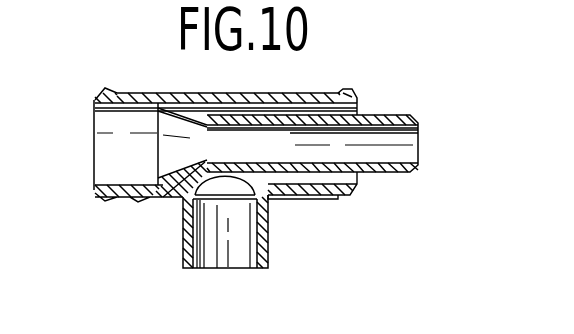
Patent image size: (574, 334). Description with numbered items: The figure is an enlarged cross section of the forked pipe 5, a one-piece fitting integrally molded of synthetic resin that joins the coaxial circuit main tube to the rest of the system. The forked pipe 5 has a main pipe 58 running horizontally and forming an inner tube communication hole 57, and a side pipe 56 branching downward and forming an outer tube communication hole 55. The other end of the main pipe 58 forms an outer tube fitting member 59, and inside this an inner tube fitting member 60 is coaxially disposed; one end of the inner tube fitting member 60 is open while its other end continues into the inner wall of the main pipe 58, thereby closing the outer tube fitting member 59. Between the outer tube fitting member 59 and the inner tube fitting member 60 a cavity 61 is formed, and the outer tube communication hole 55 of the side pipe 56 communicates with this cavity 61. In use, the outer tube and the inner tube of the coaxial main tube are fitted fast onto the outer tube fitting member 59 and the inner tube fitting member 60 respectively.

The forked pipe 5 is at (318, 91).
The outer tube communication hole 55 is at (228, 270).
The side pipe 56 is at (268, 244).
The inner tube communication hole 57 is at (94, 145).
The main pipe 58 is at (204, 93).
The outer tube fitting member 59 is at (352, 99).
The inner tube fitting member 60 is at (411, 120).
The cavity 61 is at (330, 177).